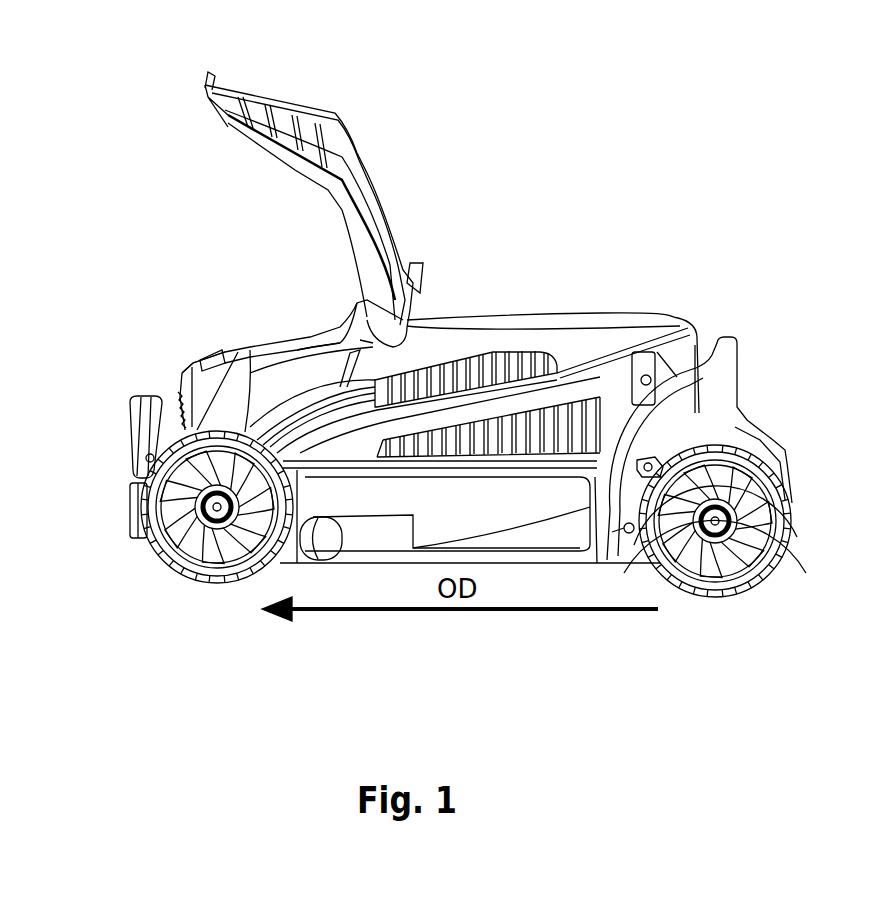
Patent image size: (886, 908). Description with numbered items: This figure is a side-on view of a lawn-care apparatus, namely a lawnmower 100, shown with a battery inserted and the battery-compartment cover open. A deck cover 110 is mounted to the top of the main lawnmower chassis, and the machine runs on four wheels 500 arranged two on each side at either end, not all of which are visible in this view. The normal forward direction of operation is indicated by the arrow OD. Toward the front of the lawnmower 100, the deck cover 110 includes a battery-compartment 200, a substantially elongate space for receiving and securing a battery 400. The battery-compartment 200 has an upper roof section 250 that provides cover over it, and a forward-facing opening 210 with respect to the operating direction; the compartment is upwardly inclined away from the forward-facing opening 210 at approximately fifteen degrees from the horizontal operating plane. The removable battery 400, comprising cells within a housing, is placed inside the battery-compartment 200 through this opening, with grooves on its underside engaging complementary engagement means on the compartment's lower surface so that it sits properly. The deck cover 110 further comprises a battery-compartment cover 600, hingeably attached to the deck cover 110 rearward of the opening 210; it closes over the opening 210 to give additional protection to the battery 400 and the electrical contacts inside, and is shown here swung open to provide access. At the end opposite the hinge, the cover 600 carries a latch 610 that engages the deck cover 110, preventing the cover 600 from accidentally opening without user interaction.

The lawnmower 100 is at (498, 298).
The deck cover 110 is at (570, 343).
The battery-compartment 200 is at (285, 397).
The forward-facing opening 210 is at (202, 408).
The upper roof section 250 is at (297, 342).
The battery 400 is at (202, 372).
The wheels 500 is at (177, 523).
The battery-compartment cover 600 is at (264, 208).
The latch 610 is at (207, 82).